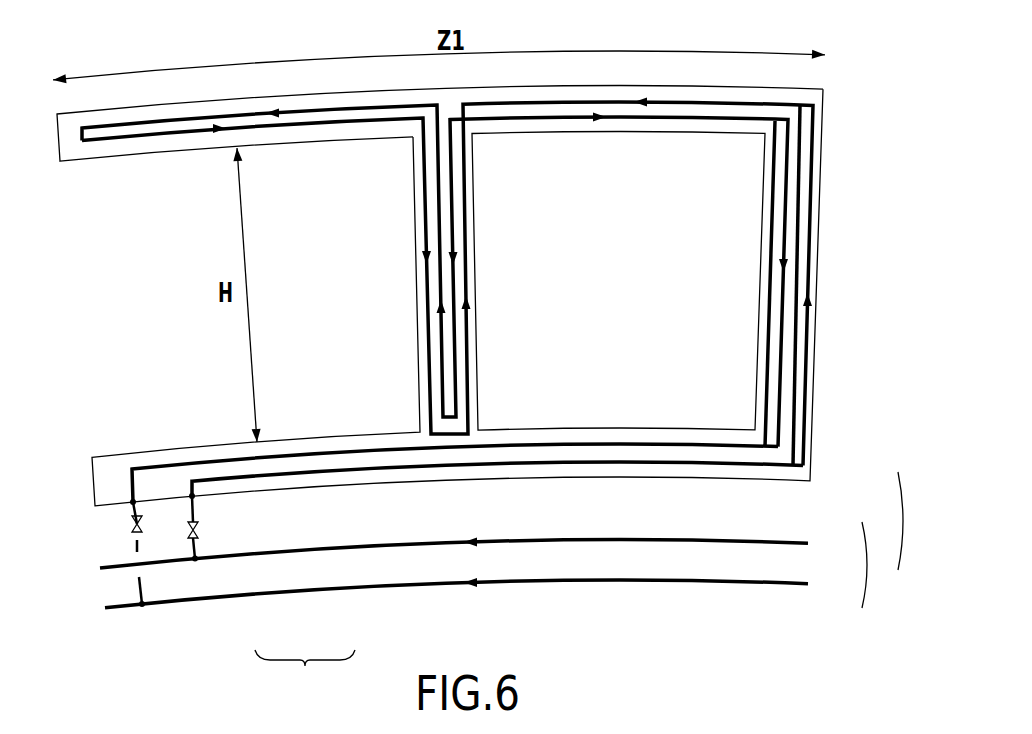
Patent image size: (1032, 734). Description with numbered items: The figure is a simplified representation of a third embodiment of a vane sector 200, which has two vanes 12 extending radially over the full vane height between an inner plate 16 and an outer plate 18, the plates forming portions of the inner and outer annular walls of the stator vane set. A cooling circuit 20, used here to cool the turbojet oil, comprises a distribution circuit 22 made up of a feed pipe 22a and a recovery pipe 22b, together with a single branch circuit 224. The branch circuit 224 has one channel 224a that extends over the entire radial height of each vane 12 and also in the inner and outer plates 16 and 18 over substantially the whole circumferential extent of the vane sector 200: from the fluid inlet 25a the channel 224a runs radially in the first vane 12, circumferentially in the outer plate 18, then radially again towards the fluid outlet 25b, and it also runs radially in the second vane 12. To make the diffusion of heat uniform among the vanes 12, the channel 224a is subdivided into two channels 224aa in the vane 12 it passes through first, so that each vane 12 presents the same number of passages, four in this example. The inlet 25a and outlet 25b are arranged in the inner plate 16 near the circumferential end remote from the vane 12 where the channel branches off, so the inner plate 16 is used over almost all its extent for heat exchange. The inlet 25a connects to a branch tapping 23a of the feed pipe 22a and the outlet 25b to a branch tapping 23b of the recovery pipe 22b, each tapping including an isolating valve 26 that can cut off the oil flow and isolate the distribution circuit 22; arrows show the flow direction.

The vane sector 200 is at (842, 67).
The outer plate 18 is at (57, 126).
The inner plate 16 is at (92, 482).
The vane 12 is at (416, 280).
The branch circuit 224 is at (416, 377).
The channel 224a is at (580, 446).
The channels 224aa is at (805, 392).
The cooling circuit 20 is at (916, 521).
The distribution circuit 22 is at (576, 609).
The feed pipe 22a is at (274, 556).
The recovery pipe 22b is at (333, 596).
The branch tapping 23a is at (196, 562).
The branch tapping 23b is at (139, 610).
The fluid inlet 25a is at (198, 503).
The fluid outlet 25b is at (128, 506).
The isolating valve 26 is at (188, 531).